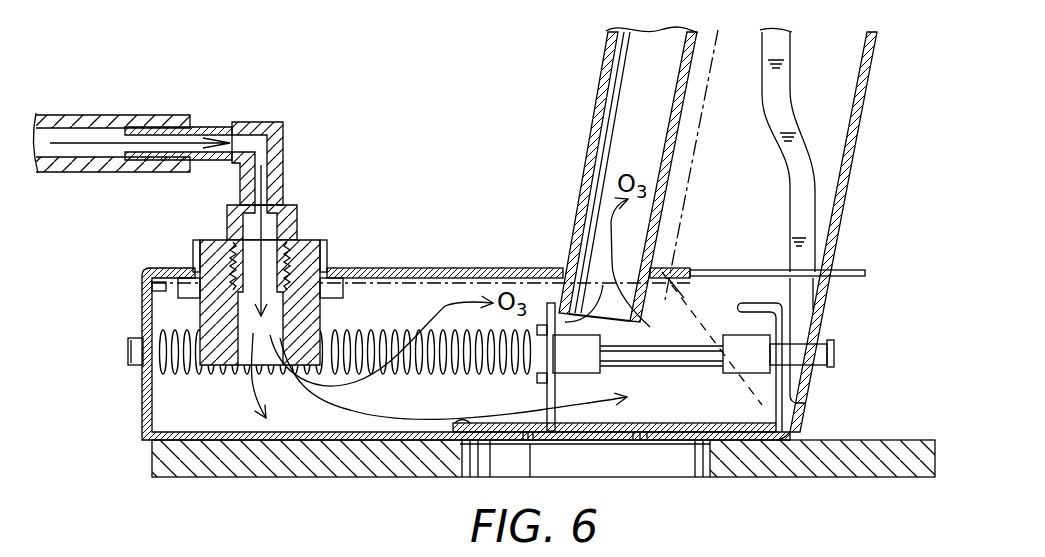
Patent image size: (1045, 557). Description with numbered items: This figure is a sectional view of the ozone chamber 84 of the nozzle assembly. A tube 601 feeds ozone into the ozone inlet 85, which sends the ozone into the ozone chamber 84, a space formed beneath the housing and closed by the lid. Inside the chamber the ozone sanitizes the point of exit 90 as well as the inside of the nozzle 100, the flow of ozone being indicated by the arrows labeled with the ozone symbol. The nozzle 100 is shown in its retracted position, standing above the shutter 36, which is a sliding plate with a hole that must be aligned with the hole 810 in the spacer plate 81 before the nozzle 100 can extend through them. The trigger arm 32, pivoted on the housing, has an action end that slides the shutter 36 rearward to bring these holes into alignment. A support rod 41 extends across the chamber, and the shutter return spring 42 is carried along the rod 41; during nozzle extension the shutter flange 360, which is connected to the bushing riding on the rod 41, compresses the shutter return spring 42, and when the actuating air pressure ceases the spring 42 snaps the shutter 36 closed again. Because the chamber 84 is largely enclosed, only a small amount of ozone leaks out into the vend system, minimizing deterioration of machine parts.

The tube 601 is at (105, 113).
The ozone inlet 85 is at (205, 123).
The nozzle 100 is at (591, 118).
The trigger arm 32 is at (793, 152).
The point of exit 90 is at (684, 283).
The shutter 36 is at (757, 297).
The support rod 41 is at (835, 352).
The shutter return spring 42 is at (170, 331).
The ozone chamber 84 is at (187, 396).
The shutter flange 360 is at (545, 400).
The hole 810 is at (670, 465).
The spacer plate 81 is at (838, 467).